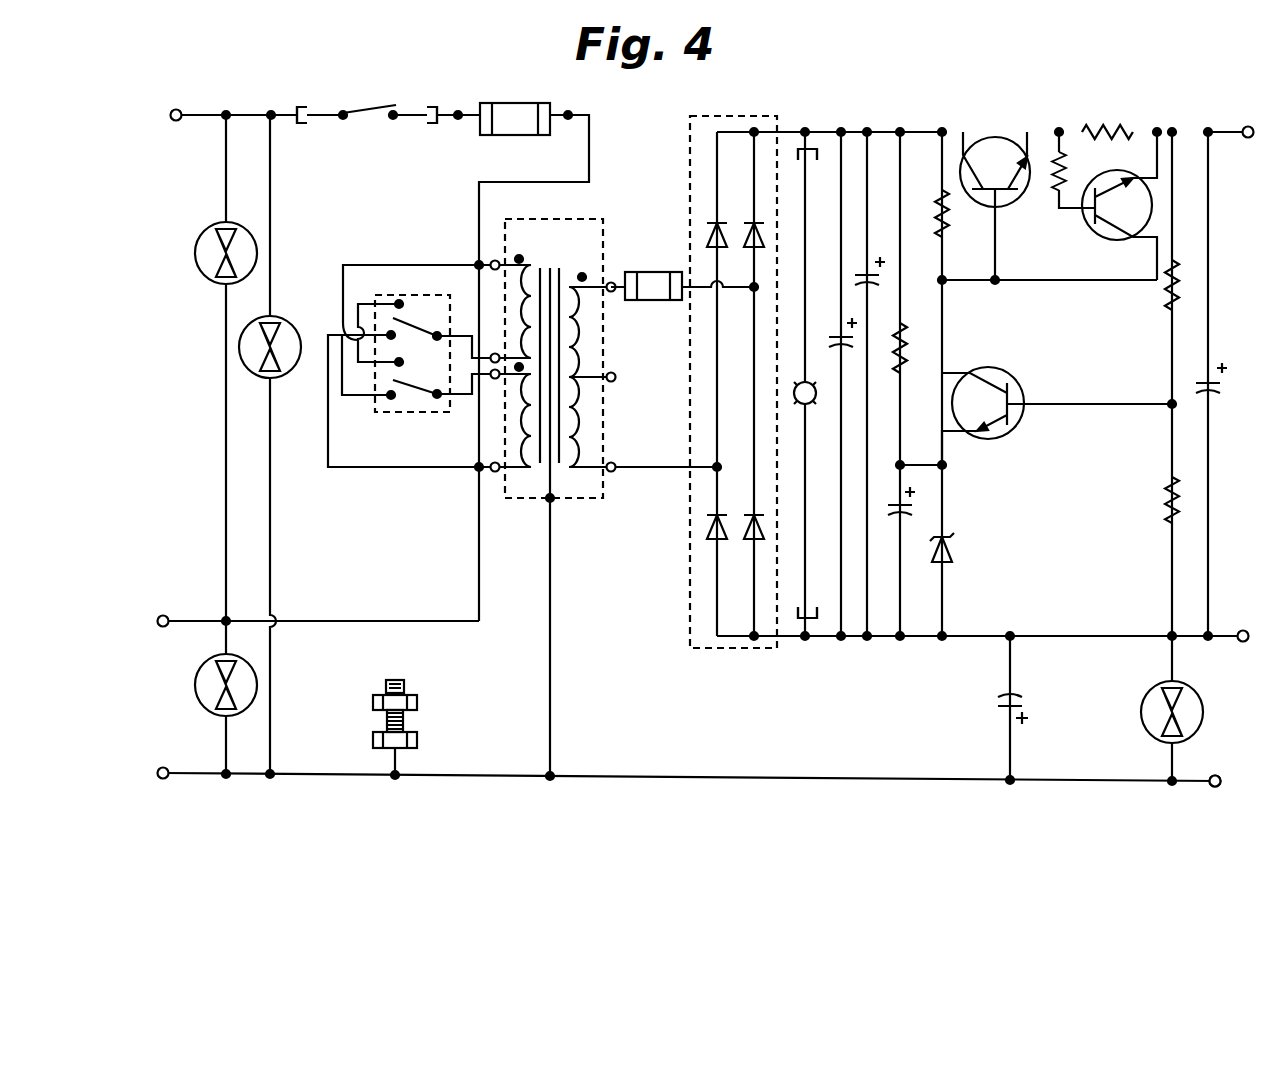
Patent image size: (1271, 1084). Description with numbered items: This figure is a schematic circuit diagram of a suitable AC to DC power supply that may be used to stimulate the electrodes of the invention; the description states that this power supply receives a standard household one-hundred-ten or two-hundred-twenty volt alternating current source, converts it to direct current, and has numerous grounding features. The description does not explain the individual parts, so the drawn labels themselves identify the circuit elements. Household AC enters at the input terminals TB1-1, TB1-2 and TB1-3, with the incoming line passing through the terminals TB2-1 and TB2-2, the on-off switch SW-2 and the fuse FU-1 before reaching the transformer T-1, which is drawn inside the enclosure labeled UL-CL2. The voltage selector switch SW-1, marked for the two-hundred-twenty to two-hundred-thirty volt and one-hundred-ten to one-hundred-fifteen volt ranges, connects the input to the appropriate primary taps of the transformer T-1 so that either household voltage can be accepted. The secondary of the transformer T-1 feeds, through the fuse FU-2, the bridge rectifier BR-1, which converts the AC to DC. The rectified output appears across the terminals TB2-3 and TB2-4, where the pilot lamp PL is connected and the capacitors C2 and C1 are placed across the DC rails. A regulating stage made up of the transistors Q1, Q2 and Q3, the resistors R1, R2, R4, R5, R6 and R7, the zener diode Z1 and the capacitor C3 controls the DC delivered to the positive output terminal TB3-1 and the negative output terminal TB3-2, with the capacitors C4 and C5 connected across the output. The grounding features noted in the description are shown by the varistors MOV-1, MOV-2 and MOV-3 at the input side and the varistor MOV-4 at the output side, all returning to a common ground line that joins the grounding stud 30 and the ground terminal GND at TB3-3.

The terminal block 1 terminal 1 TB1-1 is at (190, 103).
The terminal block 1 terminal 2 TB1-2 is at (180, 609).
The terminal block 1 terminal 3 TB1-3 is at (180, 761).
The terminal block 2 terminal 1 TB2-1 is at (293, 104).
The terminal block 2 terminal 2 TB2-2 is at (433, 104).
The terminal block 2 terminal 3 TB2-3 is at (815, 130).
The terminal block 2 terminal 4 TB2-4 is at (807, 636).
The terminal block 3 terminal 1 (+) TB3-1 is at (1242, 118).
The terminal block 3 terminal 2 (-) TB3-2 is at (1244, 623).
The terminal block 3 terminal 3 (GND) TB3-3 is at (1217, 798).
The ground terminal GND is at (1239, 782).
The on-off switch SW-2 is at (368, 113).
The voltage selector switch SW-1 is at (450, 441).
The fuse 0.5A FU-1 is at (515, 108).
The fuse 6A FU-2 is at (650, 273).
The metal oxide varistor MOV-1 is at (208, 239).
The metal oxide varistor MOV-2 is at (288, 332).
The metal oxide varistor MOV-3 is at (205, 671).
The metal oxide varistor MOV-4 is at (1148, 699).
The transformer enclosure UL-CL2 is at (592, 249).
The transformer T-1 is at (569, 363).
The bridge rectifier BR-1 is at (733, 368).
The pilot lamp PL is at (812, 409).
The capacitor C1 is at (876, 284).
The capacitor C2 is at (832, 328).
The capacitor C3 is at (890, 513).
The capacitor C4 is at (1216, 393).
The capacitor C5 is at (1003, 714).
The resistor R1 is at (927, 213).
The resistor R2 is at (914, 348).
The resistor R4 is at (1107, 121).
The resistor R5 is at (1071, 170).
The resistor R6 is at (1154, 287).
The resistor R7 is at (1156, 500).
The transistor Q1 is at (995, 192).
The transistor Q2 is at (1057, 403).
The transistor Q3 is at (1108, 206).
The zener diode Z1 is at (955, 547).
The grounding stud 30 is at (417, 737).